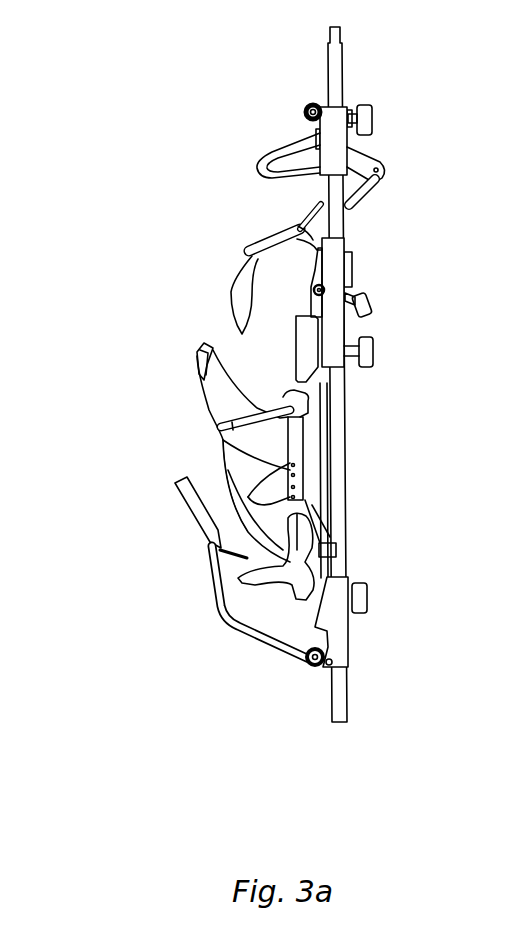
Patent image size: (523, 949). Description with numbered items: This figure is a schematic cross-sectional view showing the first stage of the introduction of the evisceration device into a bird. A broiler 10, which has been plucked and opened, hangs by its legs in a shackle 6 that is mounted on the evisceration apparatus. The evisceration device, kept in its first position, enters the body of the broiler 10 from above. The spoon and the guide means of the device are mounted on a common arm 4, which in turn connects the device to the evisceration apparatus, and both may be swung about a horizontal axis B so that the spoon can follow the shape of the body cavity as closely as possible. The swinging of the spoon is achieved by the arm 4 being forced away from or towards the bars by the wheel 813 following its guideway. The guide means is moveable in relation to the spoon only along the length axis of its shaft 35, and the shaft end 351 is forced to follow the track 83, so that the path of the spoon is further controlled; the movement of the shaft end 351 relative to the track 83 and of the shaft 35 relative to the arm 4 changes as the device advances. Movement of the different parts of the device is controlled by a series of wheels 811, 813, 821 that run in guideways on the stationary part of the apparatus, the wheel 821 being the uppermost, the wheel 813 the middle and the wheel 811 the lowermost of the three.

The wheel 821 is at (367, 117).
The track 83 is at (276, 153).
The shaft end 351 is at (383, 163).
The shaft 35 is at (350, 204).
The arm 4 is at (311, 229).
The horizontal axis B is at (325, 283).
The wheel 813 is at (373, 297).
The wheel 811 is at (374, 349).
The shackle 6 is at (194, 353).
The broiler 10 is at (220, 459).